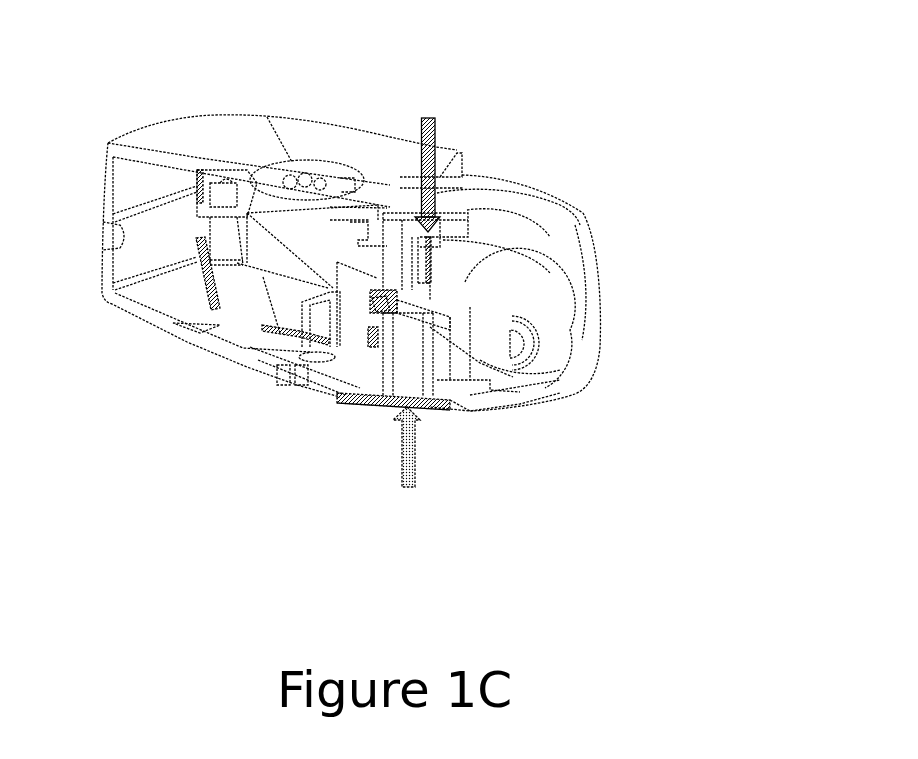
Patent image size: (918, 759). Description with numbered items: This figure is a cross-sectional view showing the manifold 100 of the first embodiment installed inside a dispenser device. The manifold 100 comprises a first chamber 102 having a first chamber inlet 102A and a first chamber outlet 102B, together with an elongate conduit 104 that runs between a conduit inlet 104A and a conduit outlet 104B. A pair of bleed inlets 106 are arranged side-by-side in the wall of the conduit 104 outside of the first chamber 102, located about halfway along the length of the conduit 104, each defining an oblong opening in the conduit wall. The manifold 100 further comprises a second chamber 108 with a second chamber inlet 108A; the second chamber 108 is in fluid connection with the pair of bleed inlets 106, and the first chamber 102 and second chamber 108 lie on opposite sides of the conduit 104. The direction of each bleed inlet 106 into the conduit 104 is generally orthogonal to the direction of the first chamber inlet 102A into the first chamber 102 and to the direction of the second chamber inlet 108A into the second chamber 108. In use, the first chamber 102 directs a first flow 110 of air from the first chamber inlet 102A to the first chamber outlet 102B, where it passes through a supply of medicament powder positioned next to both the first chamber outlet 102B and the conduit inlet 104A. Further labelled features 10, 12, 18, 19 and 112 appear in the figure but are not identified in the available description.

The device housing 10 is at (205, 103).
The mounting bracket 18 is at (332, 190).
The applied force arrow 112 is at (403, 135).
The second chamber 108 is at (485, 152).
The second chamber inlet 108A is at (514, 170).
The pair of bleed inlets 106 is at (443, 322).
The conduit 104 is at (574, 310).
The conduit outlet 104B is at (641, 357).
The lower housing portion 19 is at (610, 414).
The manifold 100 is at (519, 443).
The base 12 is at (420, 468).
The first flow of air 110 is at (430, 476).
The first chamber 102 is at (362, 401).
The first chamber inlet 102A is at (380, 459).
The first chamber outlet 102B is at (291, 399).
The conduit inlet 104A is at (272, 367).